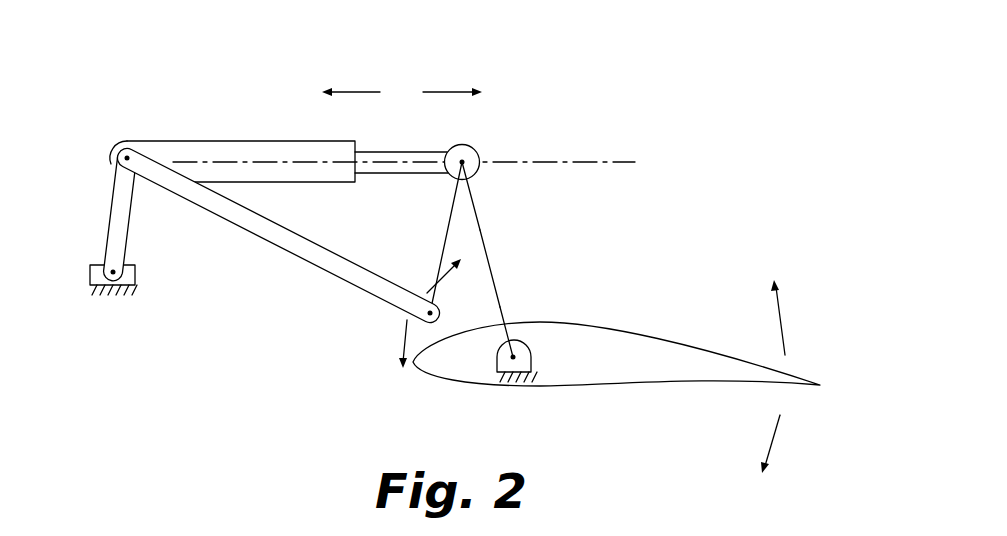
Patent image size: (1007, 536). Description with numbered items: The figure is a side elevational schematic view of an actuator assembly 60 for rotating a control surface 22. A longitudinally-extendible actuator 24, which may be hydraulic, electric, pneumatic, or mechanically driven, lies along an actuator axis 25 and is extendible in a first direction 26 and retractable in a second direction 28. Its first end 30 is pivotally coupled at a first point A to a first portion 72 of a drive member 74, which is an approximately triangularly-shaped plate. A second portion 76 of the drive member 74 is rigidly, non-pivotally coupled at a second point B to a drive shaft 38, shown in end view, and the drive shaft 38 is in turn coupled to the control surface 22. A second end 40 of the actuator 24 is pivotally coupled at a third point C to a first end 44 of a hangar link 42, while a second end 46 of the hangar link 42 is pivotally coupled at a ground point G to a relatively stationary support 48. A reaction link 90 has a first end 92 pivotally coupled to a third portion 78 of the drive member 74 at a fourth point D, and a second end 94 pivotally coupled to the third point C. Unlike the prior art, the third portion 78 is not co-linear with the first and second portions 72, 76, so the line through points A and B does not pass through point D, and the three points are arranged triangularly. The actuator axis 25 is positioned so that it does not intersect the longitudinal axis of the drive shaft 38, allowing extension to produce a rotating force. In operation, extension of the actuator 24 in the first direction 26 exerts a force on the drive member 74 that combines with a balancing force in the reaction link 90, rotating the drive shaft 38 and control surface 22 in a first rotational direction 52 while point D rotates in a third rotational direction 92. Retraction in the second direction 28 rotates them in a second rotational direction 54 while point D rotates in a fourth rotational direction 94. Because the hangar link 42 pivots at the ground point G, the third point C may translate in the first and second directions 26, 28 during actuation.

The control surface 22 is at (623, 380).
The longitudinally-extendible actuator 24 is at (190, 140).
The actuator axis 25 is at (635, 165).
The first direction 26 is at (448, 92).
The second direction 28 is at (355, 92).
The first end of actuator 30 is at (425, 173).
The drive shaft 38 is at (597, 353).
The second end of actuator 40 is at (123, 139).
The hangar link 42 is at (81, 215).
The first end of hangar link 44 is at (102, 197).
The second end of hangar link 46 is at (100, 265).
The relatively stationary support 48 is at (115, 295).
The first rotational direction 52 is at (775, 440).
The second rotational direction 54 is at (782, 322).
The actuator assembly 60 is at (366, 114).
The first portion of drive member 72 is at (474, 207).
The drive member 74 is at (495, 258).
The second portion of drive member 76 is at (503, 318).
The third portion of drive member 78 is at (440, 265).
The reaction link 90 is at (347, 287).
The first end of reaction link 92 is at (378, 275).
The second end of reaction link 94 is at (150, 178).
The first point A is at (477, 161).
The second point B is at (525, 353).
The third point C is at (112, 158).
The fourth point D is at (400, 312).
The ground point G is at (102, 272).